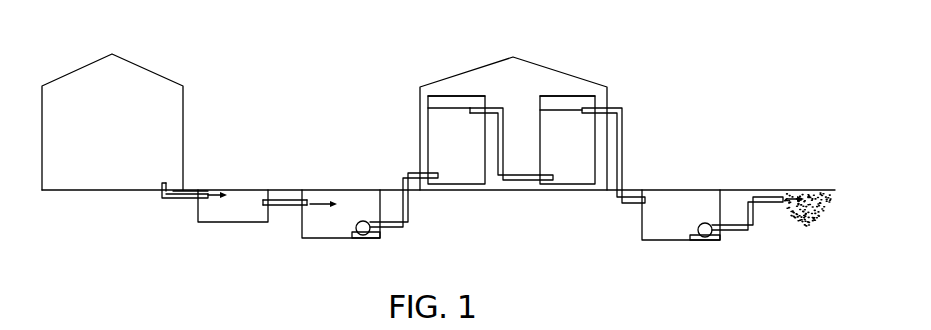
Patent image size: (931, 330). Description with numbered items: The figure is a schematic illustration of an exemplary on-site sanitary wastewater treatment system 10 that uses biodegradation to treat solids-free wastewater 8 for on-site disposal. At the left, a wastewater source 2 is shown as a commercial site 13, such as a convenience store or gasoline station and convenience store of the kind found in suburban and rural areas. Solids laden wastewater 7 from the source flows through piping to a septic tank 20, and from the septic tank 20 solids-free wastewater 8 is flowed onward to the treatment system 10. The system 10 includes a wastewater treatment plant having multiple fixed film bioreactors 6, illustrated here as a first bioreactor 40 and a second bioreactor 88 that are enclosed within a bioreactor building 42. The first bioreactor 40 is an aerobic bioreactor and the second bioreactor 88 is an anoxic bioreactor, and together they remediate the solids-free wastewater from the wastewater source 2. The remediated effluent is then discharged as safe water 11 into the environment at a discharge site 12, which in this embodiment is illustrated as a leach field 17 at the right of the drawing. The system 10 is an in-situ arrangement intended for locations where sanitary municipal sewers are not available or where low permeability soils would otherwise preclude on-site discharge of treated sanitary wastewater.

The wastewater source 2 is at (230, 30).
The commercial site 13 is at (130, 62).
The solids laden wastewater 7 is at (207, 190).
The septic tank 20 is at (221, 223).
The solids-free wastewater 8 is at (313, 198).
The first bioreactor 40 is at (434, 127).
The fixed film bioreactors 6 is at (438, 96).
The bioreactor building 42 is at (550, 69).
The second bioreactor 88 is at (590, 144).
The wastewater treatment system 10 is at (534, 241).
The safe water 11 is at (785, 190).
The discharge site 12 is at (837, 133).
The leach field 17 is at (817, 220).